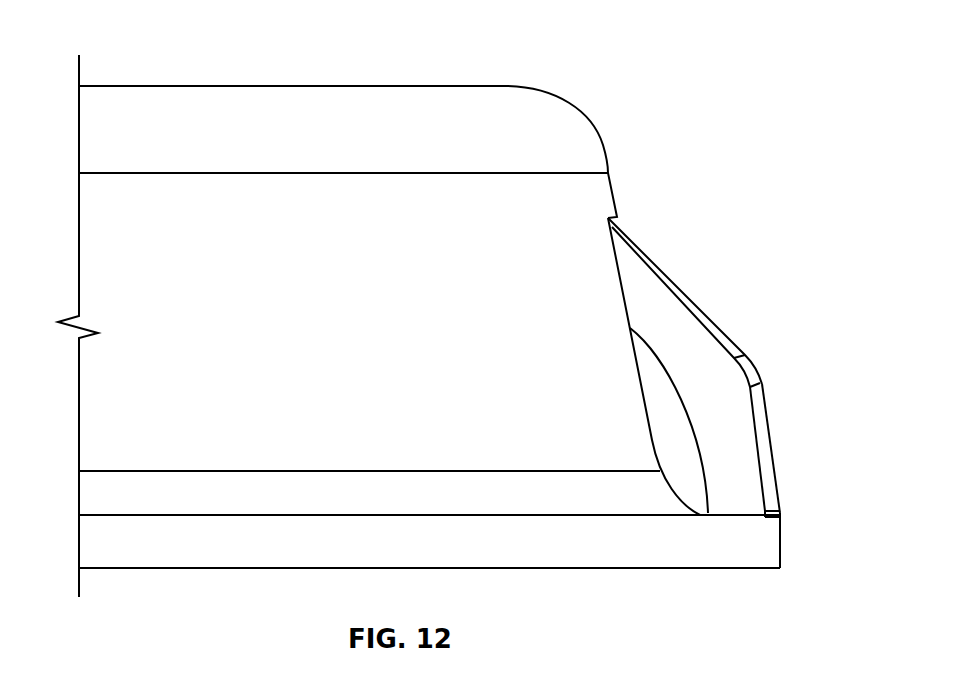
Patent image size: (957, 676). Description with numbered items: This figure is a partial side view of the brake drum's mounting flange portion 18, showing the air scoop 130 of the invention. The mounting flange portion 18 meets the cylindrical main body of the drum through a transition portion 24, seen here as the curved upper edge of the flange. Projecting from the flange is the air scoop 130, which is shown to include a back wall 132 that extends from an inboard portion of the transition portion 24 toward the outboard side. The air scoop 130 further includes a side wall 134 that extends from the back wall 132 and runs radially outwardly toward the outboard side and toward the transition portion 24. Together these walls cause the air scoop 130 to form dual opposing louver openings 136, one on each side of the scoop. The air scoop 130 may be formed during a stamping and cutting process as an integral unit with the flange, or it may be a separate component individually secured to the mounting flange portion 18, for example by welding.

The mounting flange portion 18 is at (459, 314).
The transition portion 24 is at (604, 148).
The air scoop 130 is at (720, 367).
The back wall 132 is at (774, 442).
The side wall 134 is at (713, 318).
The louver openings 136 is at (680, 256).